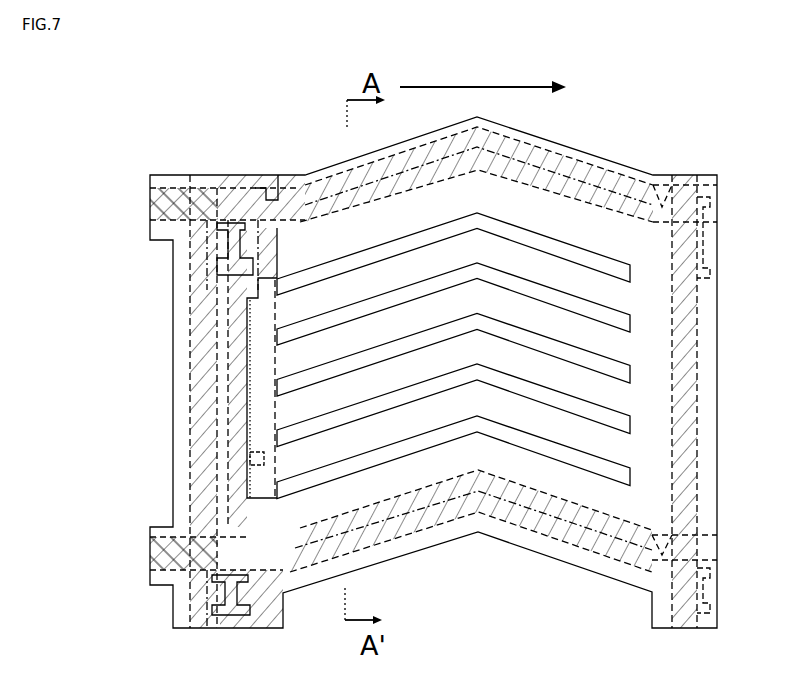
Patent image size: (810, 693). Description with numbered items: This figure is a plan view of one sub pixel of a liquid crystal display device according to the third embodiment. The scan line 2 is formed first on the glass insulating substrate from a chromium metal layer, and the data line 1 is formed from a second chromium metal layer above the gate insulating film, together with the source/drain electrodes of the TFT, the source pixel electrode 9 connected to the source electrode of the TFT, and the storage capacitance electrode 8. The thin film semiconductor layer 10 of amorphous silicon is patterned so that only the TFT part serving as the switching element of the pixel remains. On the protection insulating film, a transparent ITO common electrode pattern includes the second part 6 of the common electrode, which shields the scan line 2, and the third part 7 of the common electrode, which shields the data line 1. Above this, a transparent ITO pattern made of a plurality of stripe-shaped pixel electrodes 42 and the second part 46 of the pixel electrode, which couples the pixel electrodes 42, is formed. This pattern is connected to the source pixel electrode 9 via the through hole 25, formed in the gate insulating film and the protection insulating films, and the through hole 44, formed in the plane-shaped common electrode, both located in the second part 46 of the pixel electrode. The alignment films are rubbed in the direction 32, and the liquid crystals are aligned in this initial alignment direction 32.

The data line 1 is at (200, 380).
The scan line 2 is at (710, 192).
The second part of the common electrode 6 is at (540, 547).
The third part of the common electrode 7 is at (183, 425).
The storage capacitance electrode 8 is at (593, 553).
The source pixel electrode 9 is at (263, 198).
The thin film semiconductor layer 10 is at (236, 228).
The through hole 25 is at (250, 458).
The direction of initial alignment 32 is at (483, 74).
The stripe-shaped pixel electrodes 42 is at (567, 240).
The through hole 44 is at (235, 475).
The second part of the pixel electrode 46 is at (257, 342).